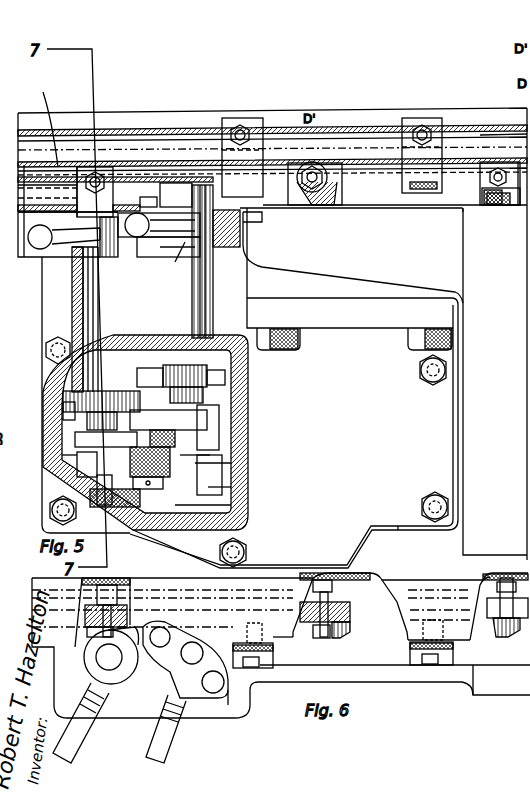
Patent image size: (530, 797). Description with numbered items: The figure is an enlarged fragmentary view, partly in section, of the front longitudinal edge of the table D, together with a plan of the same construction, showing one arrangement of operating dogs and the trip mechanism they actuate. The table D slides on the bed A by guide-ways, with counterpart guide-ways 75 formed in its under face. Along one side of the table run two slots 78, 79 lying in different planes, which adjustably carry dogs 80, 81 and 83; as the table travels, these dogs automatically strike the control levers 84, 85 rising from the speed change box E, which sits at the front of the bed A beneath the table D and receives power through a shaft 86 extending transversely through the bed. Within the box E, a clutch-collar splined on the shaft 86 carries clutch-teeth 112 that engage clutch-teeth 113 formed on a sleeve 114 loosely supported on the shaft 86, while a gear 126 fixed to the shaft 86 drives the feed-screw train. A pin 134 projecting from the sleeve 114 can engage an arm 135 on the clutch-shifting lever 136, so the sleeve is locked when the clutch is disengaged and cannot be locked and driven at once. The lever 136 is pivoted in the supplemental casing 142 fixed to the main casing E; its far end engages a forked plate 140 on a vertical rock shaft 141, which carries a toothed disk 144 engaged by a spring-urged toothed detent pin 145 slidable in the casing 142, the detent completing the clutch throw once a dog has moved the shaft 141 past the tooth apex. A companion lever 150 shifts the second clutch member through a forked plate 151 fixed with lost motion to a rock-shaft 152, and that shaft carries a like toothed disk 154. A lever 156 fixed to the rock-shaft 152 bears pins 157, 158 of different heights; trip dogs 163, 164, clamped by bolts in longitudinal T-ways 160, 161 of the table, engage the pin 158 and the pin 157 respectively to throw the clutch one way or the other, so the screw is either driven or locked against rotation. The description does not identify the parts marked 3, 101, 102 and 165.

In FIG. 5, the table D is at (445, 576).
In FIG. 5, the bed A is at (495, 334).
In FIG. 5, the speed change box E is at (250, 450).
In FIG. 5, the bar 3 is at (400, 530).
In FIG. 5, the counterpart guide-ways 75 is at (245, 227).
In FIG. 5, the slot 78 is at (465, 172).
In FIG. 5, the slot 79 is at (483, 128).
In FIG. 5, the dog 80 is at (510, 205).
In FIG. 5, the dog 81 is at (442, 148).
In FIG. 5, the dog 83 is at (140, 197).
In FIG. 5, the control lever 84 is at (140, 237).
In FIG. 6, the control lever 84 is at (165, 752).
In FIG. 5, the control lever 85 is at (44, 249).
In FIG. 6, the control lever 85 is at (75, 752).
In FIG. 5, the shaft 86 is at (215, 452).
In FIG. 6, the base plate 101 is at (472, 692).
In FIG. 5, the plate 102 is at (390, 208).
In FIG. 6, the plate 102 is at (408, 637).
In FIG. 5, the clutch-teeth 112 is at (146, 492).
In FIG. 5, the clutch-teeth 113 is at (210, 475).
In FIG. 5, the sleeve 114 is at (210, 455).
In FIG. 5, the gear 126 is at (120, 503).
In FIG. 5, the pin 134 is at (220, 487).
In FIG. 5, the arm 135 is at (215, 503).
In FIG. 5, the clutch-shifting lever 136 is at (208, 462).
In FIG. 5, the forked plate 140 is at (78, 447).
In FIG. 5, the rock shaft 141 is at (58, 470).
In FIG. 6, the rock shaft 141 is at (100, 660).
In FIG. 6, the supplemental casing 142 is at (240, 712).
In FIG. 5, the toothed disk 144 is at (112, 410).
In FIG. 6, the toothed detent pin 145 is at (100, 637).
In FIG. 5, the lever 150 is at (160, 434).
In FIG. 5, the forked plate 151 is at (168, 420).
In FIG. 5, the rock-shaft 152 is at (219, 414).
In FIG. 6, the rock-shaft 152 is at (192, 664).
In FIG. 5, the toothed disk 154 is at (225, 386).
In FIG. 6, the lever 156 is at (205, 698).
In FIG. 5, the pin 157 is at (200, 178).
In FIG. 6, the pin 157 is at (159, 647).
In FIG. 5, the pin 158 is at (150, 197).
In FIG. 6, the pin 158 is at (222, 684).
In FIG. 6, the T-way 160 is at (273, 640).
In FIG. 6, the T-way 161 is at (372, 588).
In FIG. 5, the trip dog 163 is at (263, 147).
In FIG. 6, the trip dog 163 is at (273, 656).
In FIG. 5, the trip dog 164 is at (334, 190).
In FIG. 6, the trip dog 164 is at (340, 638).
In FIG. 6, the wedge 165 is at (512, 637).